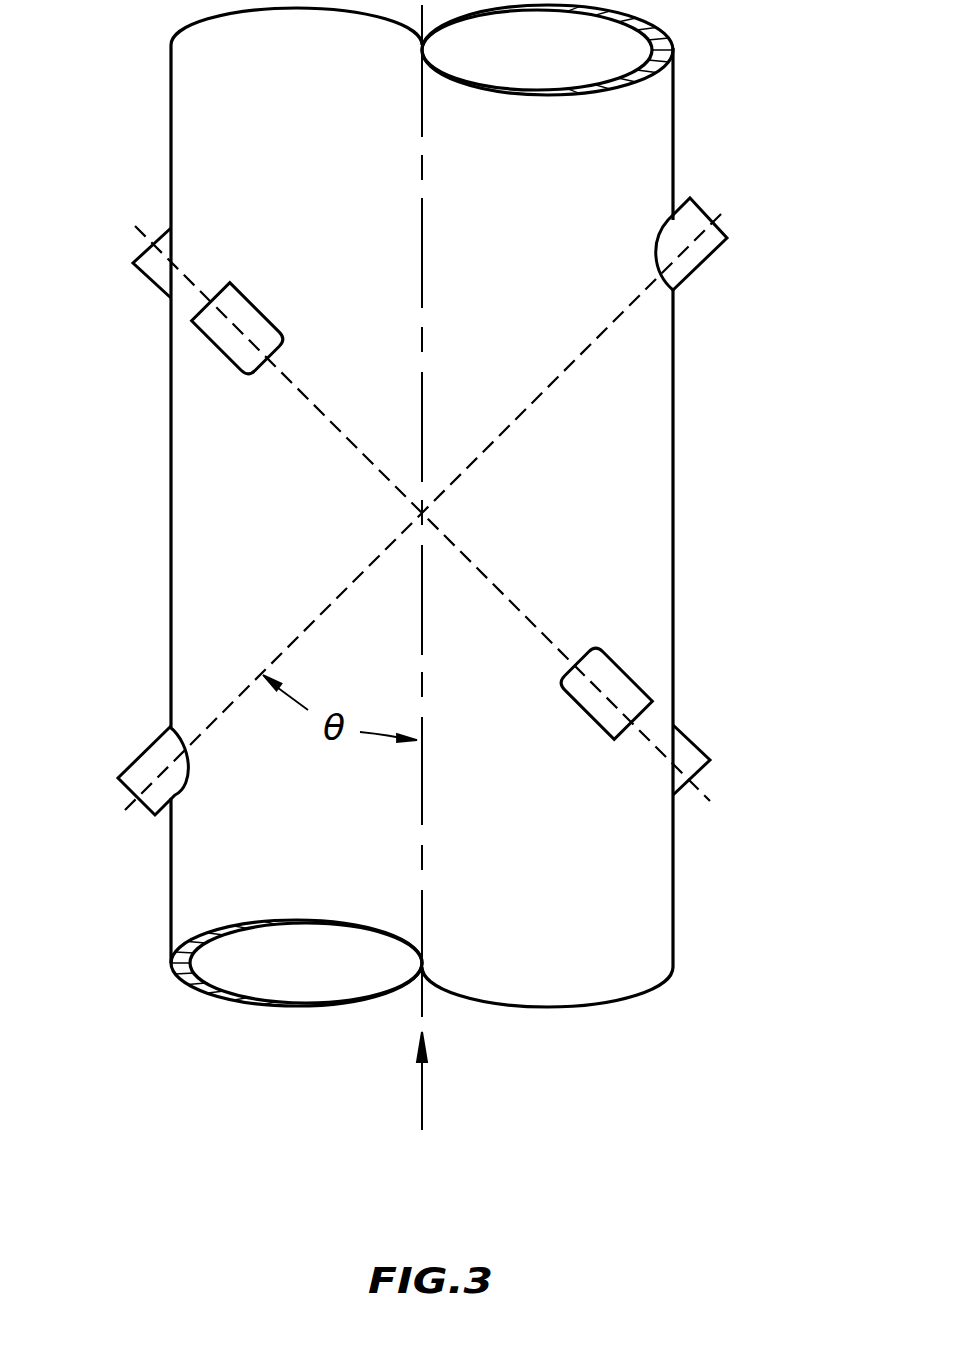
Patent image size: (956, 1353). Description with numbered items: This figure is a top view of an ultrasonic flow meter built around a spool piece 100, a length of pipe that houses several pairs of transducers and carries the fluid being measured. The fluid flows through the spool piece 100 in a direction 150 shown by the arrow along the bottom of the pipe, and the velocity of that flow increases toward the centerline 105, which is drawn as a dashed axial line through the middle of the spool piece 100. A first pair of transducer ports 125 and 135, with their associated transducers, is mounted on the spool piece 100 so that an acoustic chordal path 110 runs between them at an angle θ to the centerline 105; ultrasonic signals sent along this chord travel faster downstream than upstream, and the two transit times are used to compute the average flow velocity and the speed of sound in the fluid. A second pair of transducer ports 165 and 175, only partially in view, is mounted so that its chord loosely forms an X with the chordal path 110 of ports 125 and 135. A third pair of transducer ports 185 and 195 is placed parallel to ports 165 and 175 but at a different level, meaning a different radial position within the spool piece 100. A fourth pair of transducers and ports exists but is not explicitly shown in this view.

The spool piece 100 is at (673, 75).
The centerline 105 is at (423, 155).
The chordal path 110 is at (498, 432).
The transducer port 125 is at (707, 257).
The transducer port 135 is at (153, 737).
The flow direction 150 is at (422, 1097).
The transducer port 165 is at (150, 282).
The transducer port 175 is at (695, 738).
The transducer port 185 is at (247, 297).
The transducer port 195 is at (585, 715).